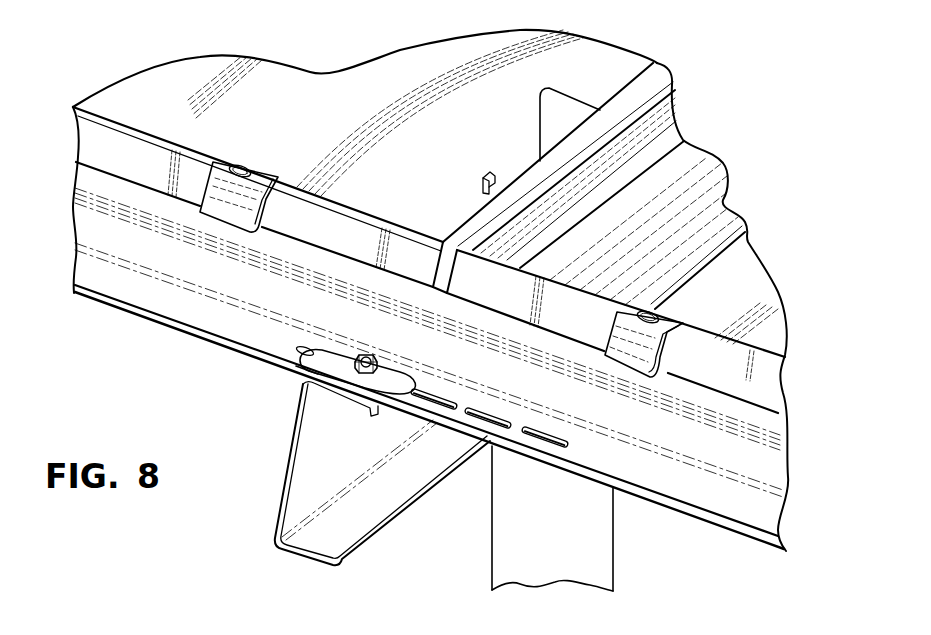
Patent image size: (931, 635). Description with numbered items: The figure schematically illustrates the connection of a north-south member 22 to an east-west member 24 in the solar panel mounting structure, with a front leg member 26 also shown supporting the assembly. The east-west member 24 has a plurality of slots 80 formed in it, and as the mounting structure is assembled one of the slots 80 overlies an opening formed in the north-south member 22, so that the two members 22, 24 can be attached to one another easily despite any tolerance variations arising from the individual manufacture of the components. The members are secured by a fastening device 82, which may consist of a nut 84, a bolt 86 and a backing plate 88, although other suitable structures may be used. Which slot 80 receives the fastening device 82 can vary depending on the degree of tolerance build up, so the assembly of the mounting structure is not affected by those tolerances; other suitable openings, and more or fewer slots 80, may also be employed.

The north-south member 22 is at (317, 545).
The east-west member 24 is at (93, 248).
The front leg member 26 is at (500, 546).
The slot 80 is at (437, 394).
The fastening device 82 is at (368, 352).
The nut 84 is at (390, 369).
The bolt 86 is at (307, 367).
The backing plate 88 is at (332, 352).